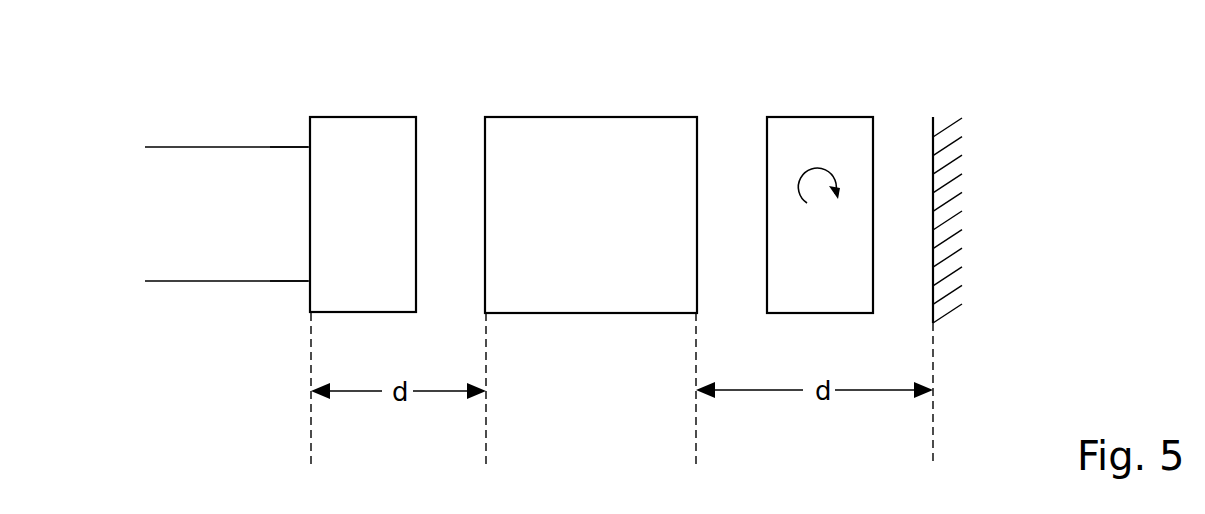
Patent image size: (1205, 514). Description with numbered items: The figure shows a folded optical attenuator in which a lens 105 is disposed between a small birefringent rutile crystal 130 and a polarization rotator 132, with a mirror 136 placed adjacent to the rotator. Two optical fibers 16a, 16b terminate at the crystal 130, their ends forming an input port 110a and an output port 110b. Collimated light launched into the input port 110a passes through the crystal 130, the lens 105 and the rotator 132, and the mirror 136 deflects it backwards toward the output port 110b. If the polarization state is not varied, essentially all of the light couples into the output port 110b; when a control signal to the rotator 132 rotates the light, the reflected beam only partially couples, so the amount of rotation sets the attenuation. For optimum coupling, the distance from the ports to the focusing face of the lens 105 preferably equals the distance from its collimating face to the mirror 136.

The first optical fiber 16a is at (232, 147).
The second optical fiber 16b is at (173, 281).
The input port 110a is at (308, 147).
The output port 110b is at (307, 281).
The birefringent crystal 130 is at (365, 117).
The lens 105 is at (573, 117).
The polarization rotator 132 is at (802, 117).
The mirror 136 is at (935, 117).